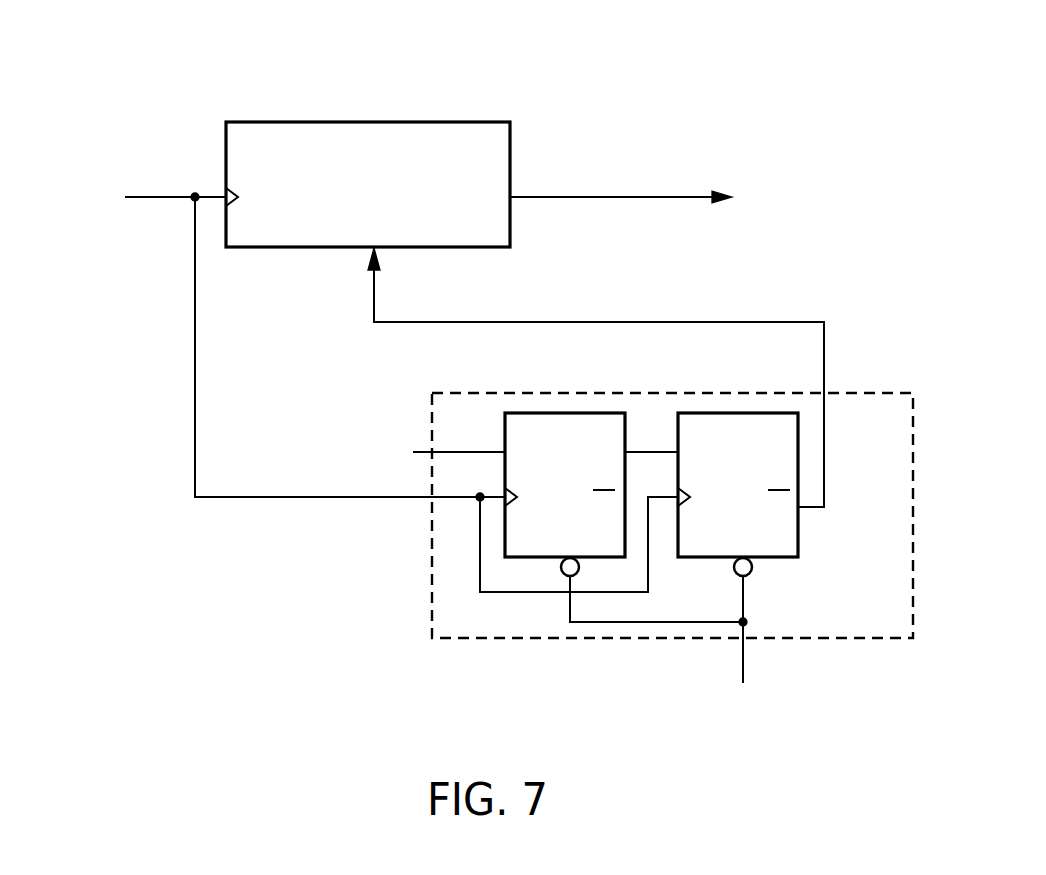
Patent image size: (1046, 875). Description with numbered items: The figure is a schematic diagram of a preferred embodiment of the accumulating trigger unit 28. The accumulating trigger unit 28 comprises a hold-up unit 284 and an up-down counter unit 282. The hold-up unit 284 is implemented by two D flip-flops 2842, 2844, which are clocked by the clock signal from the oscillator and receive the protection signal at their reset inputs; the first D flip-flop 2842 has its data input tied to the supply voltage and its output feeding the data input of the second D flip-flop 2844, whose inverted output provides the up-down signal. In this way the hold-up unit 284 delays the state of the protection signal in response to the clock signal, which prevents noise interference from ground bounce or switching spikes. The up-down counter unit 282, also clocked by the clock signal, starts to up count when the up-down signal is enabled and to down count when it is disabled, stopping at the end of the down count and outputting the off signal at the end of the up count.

The accumulating trigger unit 28 is at (910, 72).
The up-down counter unit 282 is at (462, 122).
The hold-up unit 284 is at (843, 640).
The D flip-flop 2842 is at (532, 410).
The D flip-flop 2844 is at (800, 538).